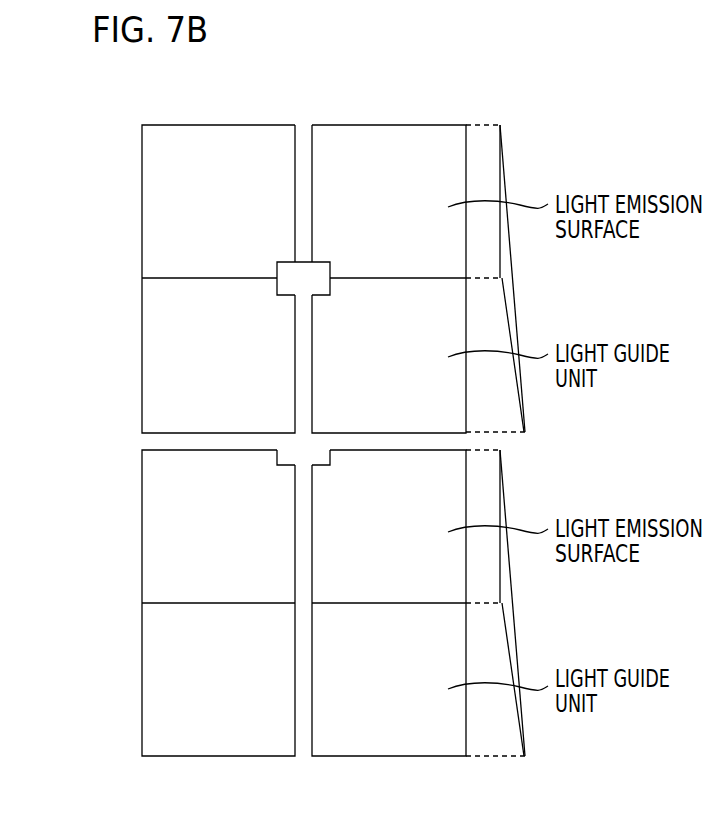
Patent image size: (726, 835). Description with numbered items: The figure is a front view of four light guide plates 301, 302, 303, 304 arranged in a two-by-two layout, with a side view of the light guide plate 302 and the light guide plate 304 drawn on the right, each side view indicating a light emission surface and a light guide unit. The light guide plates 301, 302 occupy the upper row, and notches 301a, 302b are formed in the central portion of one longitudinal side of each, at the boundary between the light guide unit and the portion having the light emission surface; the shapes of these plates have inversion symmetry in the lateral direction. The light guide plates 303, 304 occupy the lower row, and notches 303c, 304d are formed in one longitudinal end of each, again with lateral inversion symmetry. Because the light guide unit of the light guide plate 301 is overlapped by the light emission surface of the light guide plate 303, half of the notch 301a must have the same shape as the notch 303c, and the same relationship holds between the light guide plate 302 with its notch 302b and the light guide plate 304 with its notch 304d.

The light guide plate 301 is at (160, 209).
The light guide plate 302 is at (400, 125).
The light guide plate 303 is at (198, 757).
The light guide plate 304 is at (413, 757).
The notch 301a is at (285, 293).
The notch 302b is at (325, 293).
The notch 303c is at (285, 464).
The notch 304d is at (323, 464).